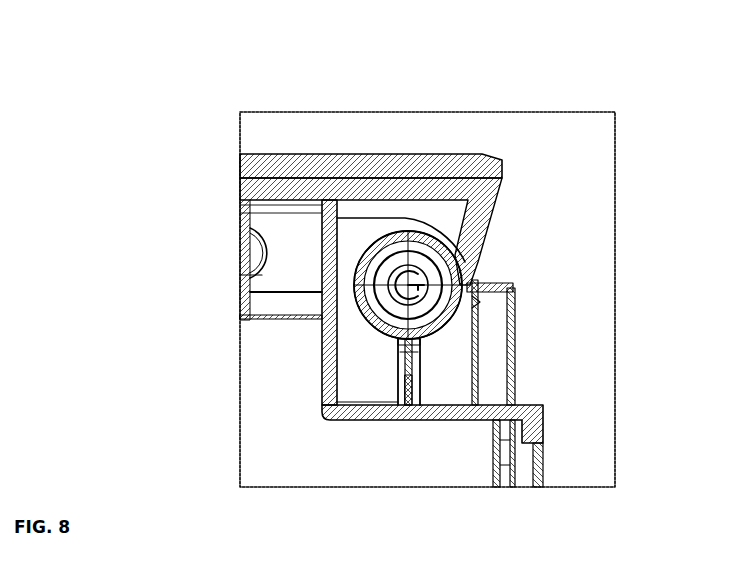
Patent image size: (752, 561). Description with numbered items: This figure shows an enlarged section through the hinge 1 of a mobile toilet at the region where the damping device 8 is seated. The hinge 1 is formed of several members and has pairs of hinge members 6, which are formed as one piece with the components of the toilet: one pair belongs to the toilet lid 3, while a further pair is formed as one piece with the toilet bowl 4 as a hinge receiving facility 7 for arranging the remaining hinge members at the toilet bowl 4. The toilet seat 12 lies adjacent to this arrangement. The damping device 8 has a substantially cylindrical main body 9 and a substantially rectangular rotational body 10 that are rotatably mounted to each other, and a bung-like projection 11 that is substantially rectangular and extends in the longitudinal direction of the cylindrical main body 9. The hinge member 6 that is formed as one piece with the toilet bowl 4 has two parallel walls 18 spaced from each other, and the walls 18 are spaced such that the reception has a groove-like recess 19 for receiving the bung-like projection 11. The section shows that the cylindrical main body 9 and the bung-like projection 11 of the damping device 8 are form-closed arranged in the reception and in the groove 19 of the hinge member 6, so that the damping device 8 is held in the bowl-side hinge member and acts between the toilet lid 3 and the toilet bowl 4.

The hinge 1 is at (492, 132).
The toilet lid 3 is at (285, 168).
The toilet bowl 4 is at (546, 412).
The hinge members 6 is at (363, 348).
The hinge receiving facility 7 is at (390, 356).
The damping device 8 is at (344, 258).
The cylindrical main body 9 is at (440, 270).
The rotational body 10 is at (428, 284).
The bung-like projection 11 is at (425, 345).
The toilet seat 12 is at (245, 188).
The walls 18 is at (413, 383).
The groove-like recess 19 is at (413, 367).